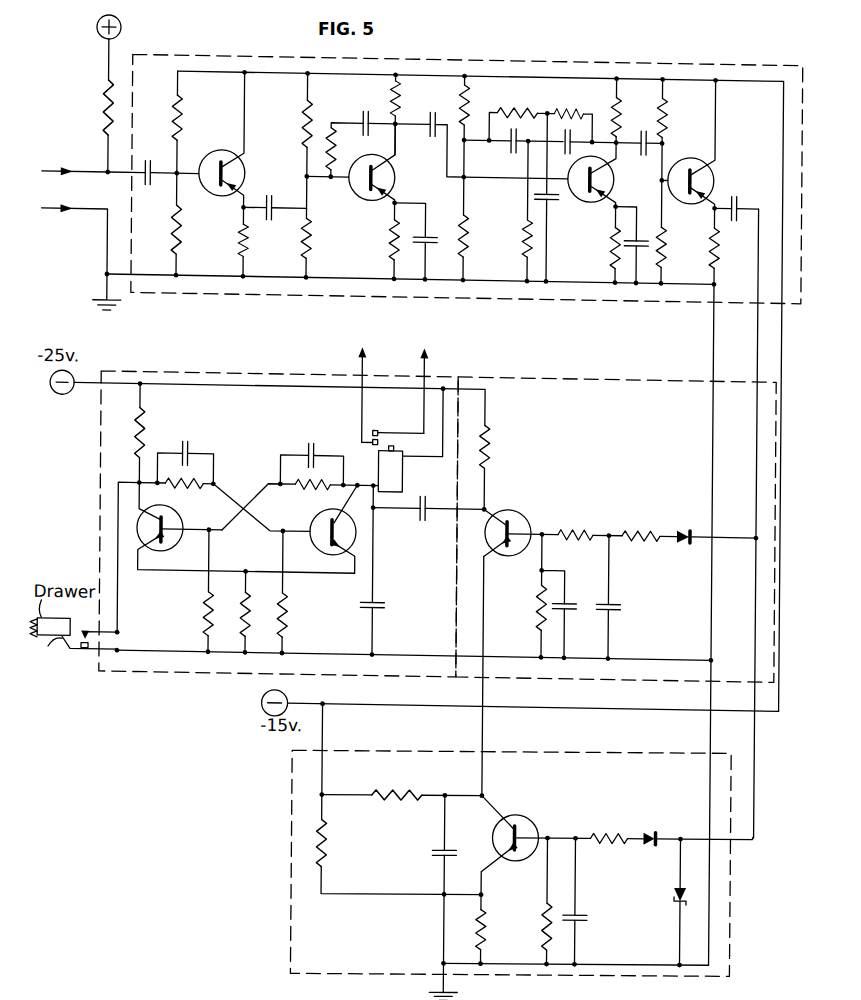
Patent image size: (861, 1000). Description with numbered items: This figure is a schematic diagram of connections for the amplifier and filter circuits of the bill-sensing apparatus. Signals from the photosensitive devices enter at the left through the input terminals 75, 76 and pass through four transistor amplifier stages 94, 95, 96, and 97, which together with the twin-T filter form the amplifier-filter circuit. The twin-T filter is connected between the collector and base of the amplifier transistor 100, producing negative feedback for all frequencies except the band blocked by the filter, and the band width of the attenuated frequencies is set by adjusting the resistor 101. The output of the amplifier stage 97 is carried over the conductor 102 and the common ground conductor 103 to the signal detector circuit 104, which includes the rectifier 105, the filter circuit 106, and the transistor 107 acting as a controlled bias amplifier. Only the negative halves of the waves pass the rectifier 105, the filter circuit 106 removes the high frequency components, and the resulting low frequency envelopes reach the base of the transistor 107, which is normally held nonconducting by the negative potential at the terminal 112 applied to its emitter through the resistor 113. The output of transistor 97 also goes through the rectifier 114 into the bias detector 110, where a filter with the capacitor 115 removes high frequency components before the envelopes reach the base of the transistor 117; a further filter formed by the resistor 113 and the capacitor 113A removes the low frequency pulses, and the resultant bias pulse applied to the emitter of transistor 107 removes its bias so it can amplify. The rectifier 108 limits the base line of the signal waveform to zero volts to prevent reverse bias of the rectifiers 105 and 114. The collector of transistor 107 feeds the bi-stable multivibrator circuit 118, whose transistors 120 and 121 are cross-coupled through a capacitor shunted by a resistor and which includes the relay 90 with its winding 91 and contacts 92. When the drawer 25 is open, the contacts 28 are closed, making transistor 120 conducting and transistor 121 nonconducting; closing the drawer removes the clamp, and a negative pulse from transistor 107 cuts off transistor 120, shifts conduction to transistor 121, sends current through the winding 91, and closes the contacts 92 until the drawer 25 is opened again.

The signal input terminal 75 is at (88, 169).
The reference input terminal 76 is at (97, 211).
The transistor amplifier stage 94 is at (234, 85).
The transistor amplifier stage 95 is at (415, 103).
The transistor amplifier stage 96 is at (634, 100).
The transistor amplifier stage 97 is at (724, 157).
The amplifier transistor 100 is at (613, 174).
The resistor 101 is at (527, 239).
The conductor 102 is at (758, 328).
The conductor 103 is at (714, 329).
The signal detector circuit 104 is at (579, 372).
The rectifier 105 is at (693, 519).
The filter circuit 106 is at (612, 502).
The transistor 107 is at (524, 511).
The relay 90 is at (351, 405).
The winding 91 is at (404, 463).
The contacts 92 is at (376, 426).
The bi-stable multivibrator circuit 118 is at (166, 370).
The transistor 120 is at (177, 519).
The transistor 121 is at (319, 519).
The drawer 25 is at (70, 623).
The contacts 28 is at (86, 650).
The bias detector 110 is at (601, 751).
The terminal 112 is at (265, 700).
The resistor 113 is at (394, 788).
The capacitor 113A is at (445, 845).
The rectifier 114 is at (659, 826).
The capacitor 115 is at (588, 917).
The transistor 117 is at (535, 822).
The rectifier 108 is at (677, 892).